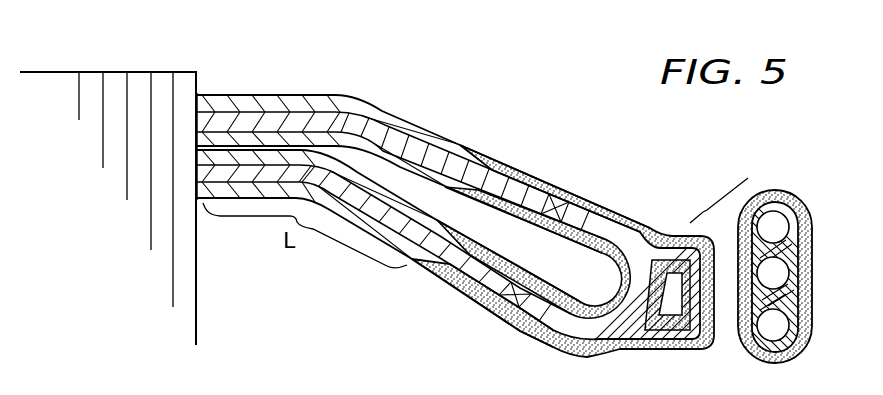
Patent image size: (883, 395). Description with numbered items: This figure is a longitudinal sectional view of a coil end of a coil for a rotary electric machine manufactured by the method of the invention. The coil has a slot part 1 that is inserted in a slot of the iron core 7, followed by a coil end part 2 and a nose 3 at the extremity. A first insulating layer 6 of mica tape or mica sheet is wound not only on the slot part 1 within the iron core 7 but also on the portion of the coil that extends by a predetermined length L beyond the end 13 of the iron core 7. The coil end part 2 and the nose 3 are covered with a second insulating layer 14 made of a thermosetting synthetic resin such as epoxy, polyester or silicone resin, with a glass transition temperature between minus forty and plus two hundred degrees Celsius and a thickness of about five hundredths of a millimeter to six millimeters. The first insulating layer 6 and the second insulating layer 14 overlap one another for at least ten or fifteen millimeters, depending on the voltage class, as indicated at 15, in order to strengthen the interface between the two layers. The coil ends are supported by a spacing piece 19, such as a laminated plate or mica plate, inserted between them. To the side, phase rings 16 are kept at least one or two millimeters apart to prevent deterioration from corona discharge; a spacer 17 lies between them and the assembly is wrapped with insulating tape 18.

The slot part 1 is at (374, 128).
The coil end part 2 is at (527, 193).
The nose 3 is at (673, 338).
The first insulating layer 6 is at (309, 95).
The iron core 7 is at (60, 93).
The end of the iron core 13 is at (200, 93).
The second insulating layer 14 is at (623, 218).
The overlap of the first and second insulating layers 15 is at (480, 151).
The phase ring 16 is at (790, 228).
The spacer 17 is at (783, 252).
The insulating tape 18 is at (792, 315).
The spacing piece 19 is at (565, 190).